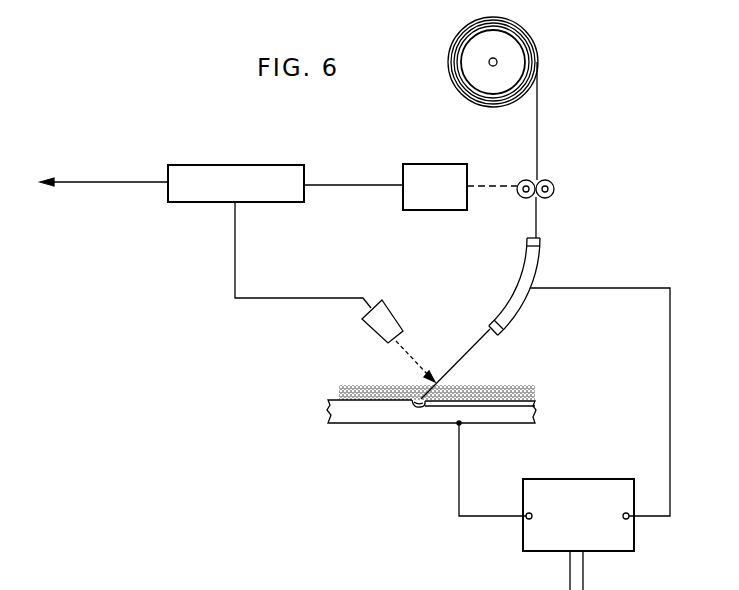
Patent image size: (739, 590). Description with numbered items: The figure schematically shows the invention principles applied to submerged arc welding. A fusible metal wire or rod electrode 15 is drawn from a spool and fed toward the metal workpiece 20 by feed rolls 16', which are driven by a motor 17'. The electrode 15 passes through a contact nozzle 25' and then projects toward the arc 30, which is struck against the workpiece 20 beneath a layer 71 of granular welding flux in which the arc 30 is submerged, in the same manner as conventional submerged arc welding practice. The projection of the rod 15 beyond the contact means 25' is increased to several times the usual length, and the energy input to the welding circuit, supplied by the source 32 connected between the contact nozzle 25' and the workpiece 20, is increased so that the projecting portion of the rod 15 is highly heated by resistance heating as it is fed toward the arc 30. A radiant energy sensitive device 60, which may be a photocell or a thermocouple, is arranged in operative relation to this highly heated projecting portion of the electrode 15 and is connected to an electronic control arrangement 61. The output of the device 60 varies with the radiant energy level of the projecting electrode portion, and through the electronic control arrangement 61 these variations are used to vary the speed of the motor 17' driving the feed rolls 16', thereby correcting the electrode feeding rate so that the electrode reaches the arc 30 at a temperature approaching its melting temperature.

The fusible metal wire electrode 15 is at (539, 122).
The feed rolls 16' is at (557, 178).
The motor 17' is at (460, 172).
The contact nozzle 25' is at (539, 276).
The electronic control arrangement 61 is at (240, 163).
The radiant energy sensitive device 60 is at (389, 318).
The metal workpiece 20 is at (392, 412).
The arc 30 is at (418, 399).
The layer of granular welding flux 71 is at (515, 396).
The welding power source 32 is at (571, 493).